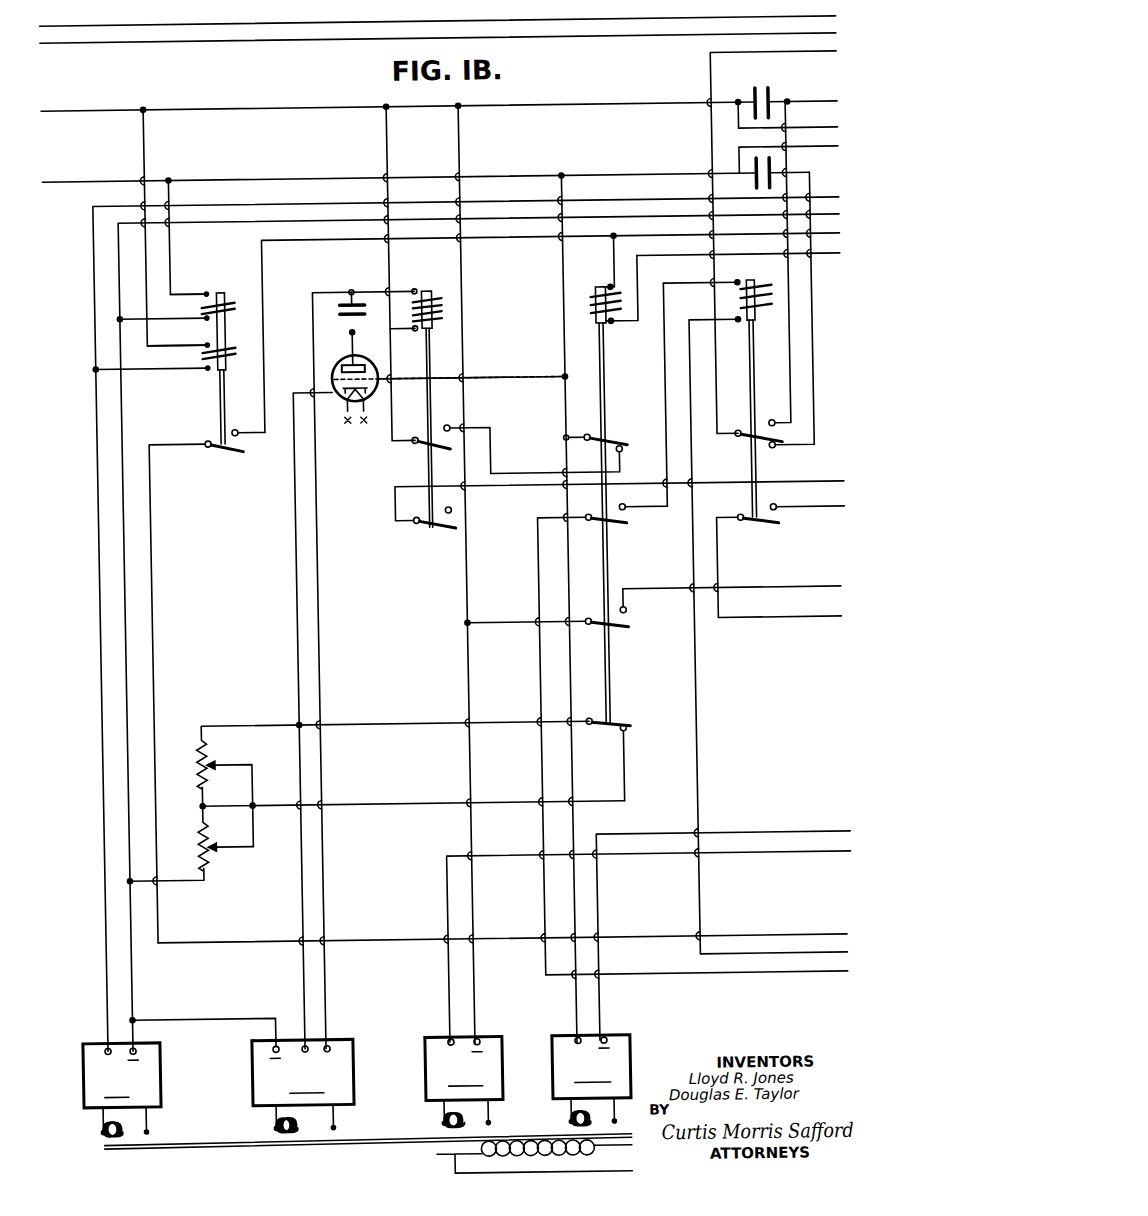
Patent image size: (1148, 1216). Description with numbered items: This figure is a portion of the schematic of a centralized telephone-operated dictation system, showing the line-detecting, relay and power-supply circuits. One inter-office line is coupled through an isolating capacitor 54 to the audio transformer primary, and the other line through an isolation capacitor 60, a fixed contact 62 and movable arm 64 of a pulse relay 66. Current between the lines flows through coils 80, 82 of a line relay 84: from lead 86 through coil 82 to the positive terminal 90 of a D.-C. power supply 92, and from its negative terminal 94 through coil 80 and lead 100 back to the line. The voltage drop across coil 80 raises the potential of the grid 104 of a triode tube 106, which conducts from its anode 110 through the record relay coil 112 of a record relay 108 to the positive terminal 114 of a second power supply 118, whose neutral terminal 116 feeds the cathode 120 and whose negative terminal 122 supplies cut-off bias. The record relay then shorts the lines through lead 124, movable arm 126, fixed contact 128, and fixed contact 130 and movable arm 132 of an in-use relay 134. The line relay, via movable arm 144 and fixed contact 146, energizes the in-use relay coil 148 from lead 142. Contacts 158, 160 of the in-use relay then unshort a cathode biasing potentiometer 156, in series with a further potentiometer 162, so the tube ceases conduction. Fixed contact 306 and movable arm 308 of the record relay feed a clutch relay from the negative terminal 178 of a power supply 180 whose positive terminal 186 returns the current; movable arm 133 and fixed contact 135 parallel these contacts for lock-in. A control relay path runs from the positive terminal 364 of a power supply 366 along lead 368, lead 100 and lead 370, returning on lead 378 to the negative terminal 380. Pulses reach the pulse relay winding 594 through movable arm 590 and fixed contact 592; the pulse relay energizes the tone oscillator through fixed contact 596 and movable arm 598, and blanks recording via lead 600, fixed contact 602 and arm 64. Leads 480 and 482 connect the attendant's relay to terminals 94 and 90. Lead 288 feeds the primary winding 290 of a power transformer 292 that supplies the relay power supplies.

The lead 370 is at (68, 43).
The isolating capacitor 54 is at (760, 100).
The lead 86 is at (148, 156).
The lead 124 is at (392, 152).
The lead 100 is at (176, 194).
The isolation capacitor 60 is at (762, 180).
The lead 482 is at (838, 189).
The lead 480 is at (780, 212).
The line relay 84 is at (244, 288).
The line relay coil 80 is at (240, 308).
The line relay coil 82 is at (240, 353).
The fixed contact 146 is at (237, 428).
The movable arm 144 is at (236, 454).
The triode tube 106 is at (338, 357).
The grid 104 is at (336, 371).
The anode 110 is at (365, 365).
The cathode 120 is at (381, 390).
The record relay 108 is at (448, 304).
The record relay coil 112 is at (446, 320).
The movable arm 126 is at (428, 455).
The fixed contact 128 is at (449, 424).
The fixed contact 130 is at (626, 452).
The movable arm 132 is at (608, 437).
The lead 368 is at (566, 410).
The in-use relay 134 is at (590, 302).
The in-use relay coil 148 is at (594, 316).
The movable arm 308 is at (440, 532).
The fixed contact 306 is at (453, 509).
The fixed contact 592 is at (635, 498).
The movable arm 590 is at (612, 527).
The pulse relay 66 is at (748, 310).
The pulse relay winding 594 is at (776, 312).
The lead 600 is at (794, 378).
The fixed contact 602 is at (783, 413).
The movable arm 64 is at (742, 444).
The fixed contact 62 is at (776, 452).
The fixed contact 596 is at (778, 508).
The movable arm 598 is at (770, 530).
The fixed contact 135 is at (626, 610).
The movable arm 133 is at (616, 630).
The lead 142 is at (154, 590).
The cathode biasing potentiometer 156 is at (194, 756).
The cathode biasing potentiometer 162 is at (194, 840).
The contact 158 is at (616, 724).
The contact 160 is at (624, 733).
The lead 378 is at (836, 830).
The D.-C. power supply 92 is at (122, 1090).
The positive terminal 90 is at (96, 1044).
The negative terminal 94 is at (128, 1042).
The D.-C. power supply 118 is at (303, 1085).
The negative terminal 122 is at (260, 1042).
The neutral terminal 116 is at (294, 1042).
The positive terminal 114 is at (320, 1042).
The power supply 180 is at (464, 1081).
The positive terminal 186 is at (440, 1040).
The negative terminal 178 is at (470, 1040).
The D.-C. power supply 366 is at (592, 1080).
The positive terminal 364 is at (568, 1040).
The negative terminal 380 is at (596, 1040).
The power transformer 292 is at (262, 1152).
The primary winding 290 is at (514, 1157).
The lead 288 is at (626, 1152).